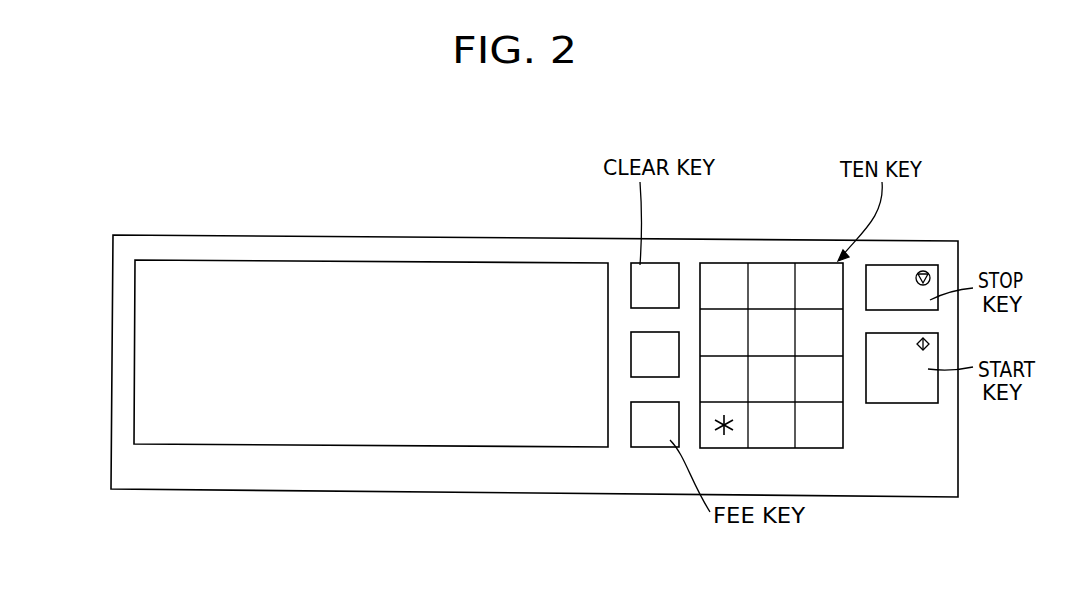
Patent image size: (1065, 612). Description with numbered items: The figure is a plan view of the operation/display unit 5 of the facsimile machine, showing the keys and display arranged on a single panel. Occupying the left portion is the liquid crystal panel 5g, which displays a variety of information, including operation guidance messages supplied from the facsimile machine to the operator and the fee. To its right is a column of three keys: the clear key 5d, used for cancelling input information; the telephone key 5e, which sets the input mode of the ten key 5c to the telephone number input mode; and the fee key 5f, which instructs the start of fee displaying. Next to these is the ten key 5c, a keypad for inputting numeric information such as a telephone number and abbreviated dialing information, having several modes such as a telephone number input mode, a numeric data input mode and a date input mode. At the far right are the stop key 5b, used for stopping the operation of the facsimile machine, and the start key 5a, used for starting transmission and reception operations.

The operation/display unit 5 is at (734, 236).
The start key 5a is at (916, 404).
The stop key 5b is at (925, 265).
The ten key 5c is at (784, 258).
The clear key 5d is at (667, 263).
The telephone key 5e is at (680, 331).
The fee key 5f is at (660, 448).
The liquid crystal panel 5g is at (593, 262).